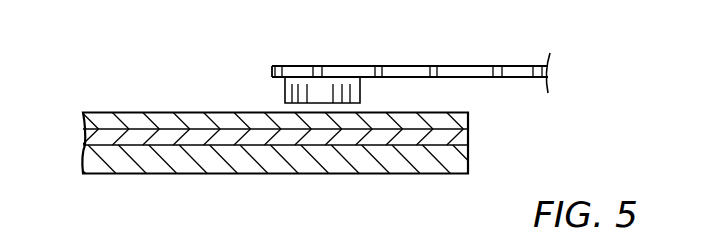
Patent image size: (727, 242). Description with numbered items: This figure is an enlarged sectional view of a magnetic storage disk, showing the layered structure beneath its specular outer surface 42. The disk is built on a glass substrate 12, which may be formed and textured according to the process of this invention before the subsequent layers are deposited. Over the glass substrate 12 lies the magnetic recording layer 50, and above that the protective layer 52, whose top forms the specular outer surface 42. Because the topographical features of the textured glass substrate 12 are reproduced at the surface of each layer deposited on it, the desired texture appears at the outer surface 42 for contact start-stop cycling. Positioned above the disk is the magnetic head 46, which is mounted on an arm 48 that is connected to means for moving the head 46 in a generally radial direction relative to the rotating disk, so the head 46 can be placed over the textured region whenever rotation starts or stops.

The glass substrate 12 is at (468, 168).
The specular outer surface 42 is at (122, 112).
The magnetic head 46 is at (292, 90).
The arm 48 is at (450, 66).
The magnetic recording layer 50 is at (468, 142).
The protective layer 52 is at (172, 120).